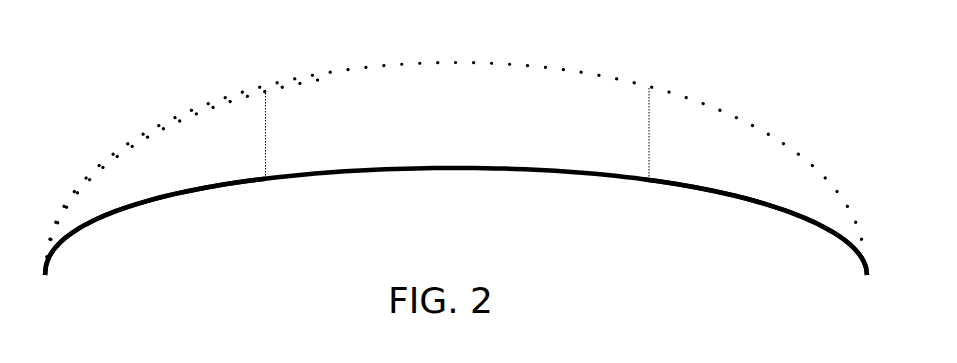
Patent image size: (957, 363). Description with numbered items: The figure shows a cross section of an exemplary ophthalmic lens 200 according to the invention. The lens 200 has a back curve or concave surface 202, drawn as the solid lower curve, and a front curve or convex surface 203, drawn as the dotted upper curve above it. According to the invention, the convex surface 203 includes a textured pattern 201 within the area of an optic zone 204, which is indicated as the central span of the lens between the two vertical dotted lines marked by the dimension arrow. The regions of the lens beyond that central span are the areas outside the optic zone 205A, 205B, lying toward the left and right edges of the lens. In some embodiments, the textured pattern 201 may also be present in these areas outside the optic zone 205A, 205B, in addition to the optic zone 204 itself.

The ophthalmic lens 200 is at (420, 154).
The textured pattern 201 is at (551, 62).
The back curve or concave surface 202 is at (531, 174).
The front curve or convex surface 203 is at (311, 79).
The optic zone 204 is at (636, 112).
The area outside the optic zone 205A is at (155, 225).
The area outside the optic zone 205B is at (756, 225).